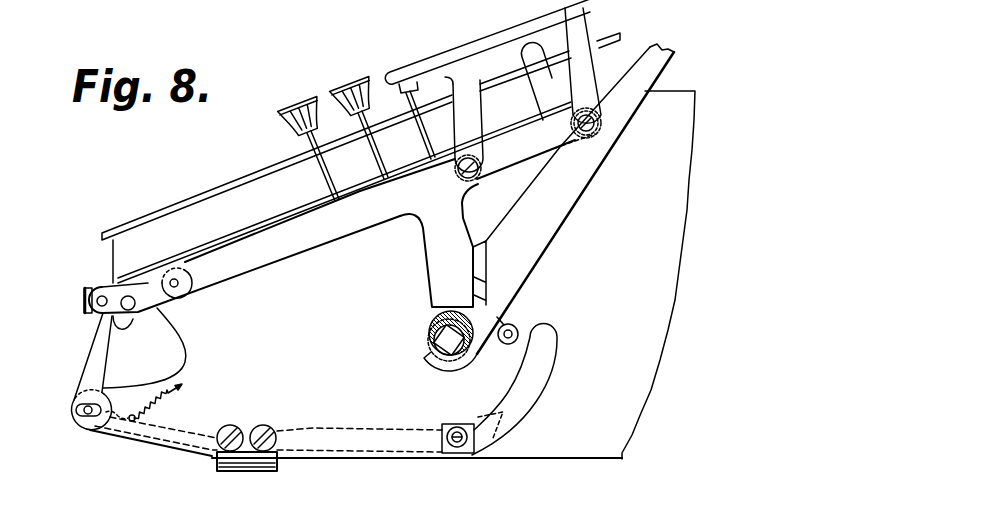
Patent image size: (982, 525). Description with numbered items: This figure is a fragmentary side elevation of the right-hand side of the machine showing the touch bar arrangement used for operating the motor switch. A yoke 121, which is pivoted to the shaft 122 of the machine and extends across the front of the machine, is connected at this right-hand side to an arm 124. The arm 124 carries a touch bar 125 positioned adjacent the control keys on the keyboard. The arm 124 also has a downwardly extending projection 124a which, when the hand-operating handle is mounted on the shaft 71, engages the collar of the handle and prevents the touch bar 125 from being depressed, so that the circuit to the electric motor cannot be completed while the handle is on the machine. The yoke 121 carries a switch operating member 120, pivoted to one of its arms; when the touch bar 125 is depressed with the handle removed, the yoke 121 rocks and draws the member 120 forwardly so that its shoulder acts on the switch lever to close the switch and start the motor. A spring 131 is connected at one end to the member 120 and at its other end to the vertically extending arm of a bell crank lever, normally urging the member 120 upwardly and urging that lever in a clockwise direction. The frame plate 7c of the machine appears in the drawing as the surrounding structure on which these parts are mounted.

The frame plate 7c is at (567, 235).
The shaft 71 is at (425, 324).
The switch operating member 120 is at (357, 447).
The yoke 121 is at (84, 292).
The shaft of the machine 122 is at (116, 326).
The arm 124 is at (274, 254).
The downwardly extending projection 124a is at (436, 280).
The touch bar 125 is at (433, 57).
The spring 131 is at (168, 401).